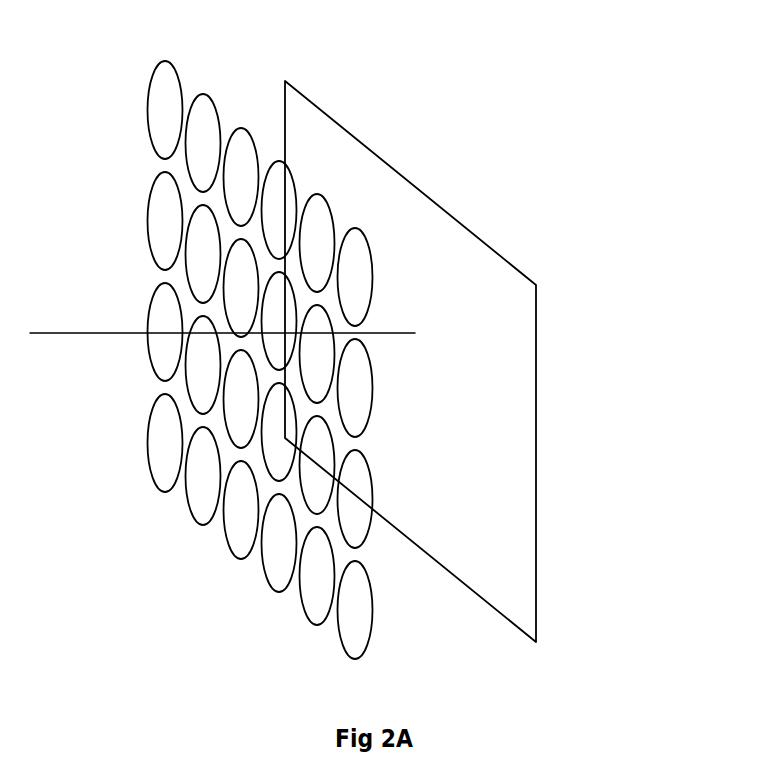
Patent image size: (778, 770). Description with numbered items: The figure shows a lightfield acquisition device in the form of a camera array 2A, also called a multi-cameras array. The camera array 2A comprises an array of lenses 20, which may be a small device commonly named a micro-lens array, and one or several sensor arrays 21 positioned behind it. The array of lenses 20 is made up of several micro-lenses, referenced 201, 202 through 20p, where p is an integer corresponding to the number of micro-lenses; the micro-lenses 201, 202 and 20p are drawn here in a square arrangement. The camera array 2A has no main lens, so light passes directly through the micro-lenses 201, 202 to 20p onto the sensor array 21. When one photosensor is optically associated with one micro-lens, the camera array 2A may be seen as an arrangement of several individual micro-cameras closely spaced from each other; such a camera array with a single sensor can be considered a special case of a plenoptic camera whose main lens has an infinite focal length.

The array of lenses 20 is at (258, 358).
The micro-lens 201 is at (162, 96).
The micro-lens 202 is at (162, 207).
The micro-lens 20p is at (355, 617).
The sensor array 21 is at (525, 338).
The camera array 2A is at (576, 161).